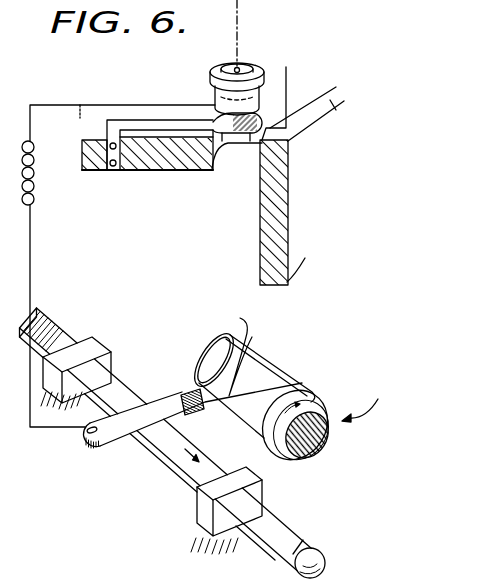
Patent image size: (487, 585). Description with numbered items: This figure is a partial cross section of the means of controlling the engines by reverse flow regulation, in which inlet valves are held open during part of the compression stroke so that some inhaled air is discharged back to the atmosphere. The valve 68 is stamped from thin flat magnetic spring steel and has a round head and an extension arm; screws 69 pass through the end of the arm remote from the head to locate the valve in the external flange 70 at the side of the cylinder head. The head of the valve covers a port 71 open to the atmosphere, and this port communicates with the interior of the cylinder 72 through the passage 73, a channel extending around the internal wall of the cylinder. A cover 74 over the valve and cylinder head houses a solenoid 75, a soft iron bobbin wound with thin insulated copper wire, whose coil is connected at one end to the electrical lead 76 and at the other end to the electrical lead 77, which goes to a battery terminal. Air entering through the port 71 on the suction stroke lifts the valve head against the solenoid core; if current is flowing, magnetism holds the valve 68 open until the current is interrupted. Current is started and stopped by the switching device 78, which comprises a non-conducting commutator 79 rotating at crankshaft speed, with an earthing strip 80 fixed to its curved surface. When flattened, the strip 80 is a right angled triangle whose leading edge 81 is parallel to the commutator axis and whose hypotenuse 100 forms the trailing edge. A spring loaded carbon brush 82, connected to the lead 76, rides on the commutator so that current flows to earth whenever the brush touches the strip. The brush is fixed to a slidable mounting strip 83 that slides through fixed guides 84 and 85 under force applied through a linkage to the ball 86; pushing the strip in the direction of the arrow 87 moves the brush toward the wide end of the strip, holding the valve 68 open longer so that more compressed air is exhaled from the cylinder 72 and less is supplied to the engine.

The valve 68 is at (231, 120).
The screws 69 is at (114, 166).
The external flange 70 is at (180, 160).
The port 71 is at (246, 150).
The cylinder 72 is at (290, 173).
The passage 73 is at (318, 113).
The cover 74 is at (288, 84).
The solenoid 75 is at (246, 70).
The electrical lead 76 is at (30, 248).
The electrical lead 77 is at (237, 34).
The switching device 78 is at (366, 397).
The commutator 79 is at (300, 389).
The earthing strip 80 is at (268, 368).
The leading edge 81 is at (258, 350).
The carbon brush 82 is at (193, 389).
The slidable mounting strip 83 is at (172, 450).
The fixed guide 84 is at (95, 352).
The fixed guide 85 is at (207, 509).
The ball 86 is at (314, 557).
The arrow 87 is at (190, 477).
The hypotenuse 100 is at (238, 342).